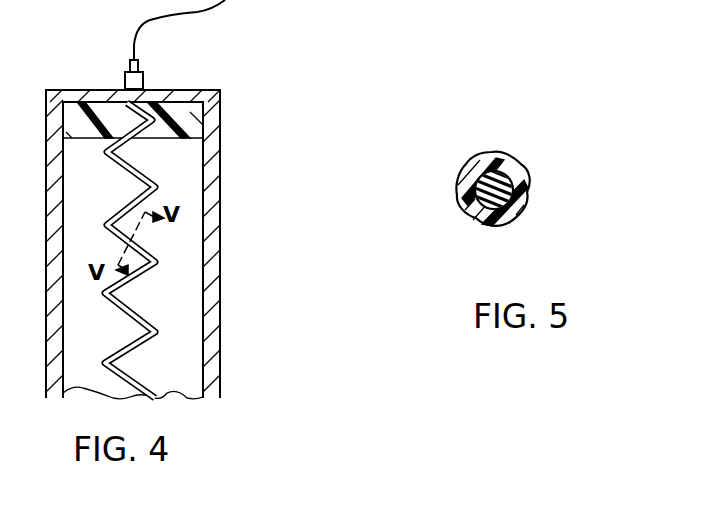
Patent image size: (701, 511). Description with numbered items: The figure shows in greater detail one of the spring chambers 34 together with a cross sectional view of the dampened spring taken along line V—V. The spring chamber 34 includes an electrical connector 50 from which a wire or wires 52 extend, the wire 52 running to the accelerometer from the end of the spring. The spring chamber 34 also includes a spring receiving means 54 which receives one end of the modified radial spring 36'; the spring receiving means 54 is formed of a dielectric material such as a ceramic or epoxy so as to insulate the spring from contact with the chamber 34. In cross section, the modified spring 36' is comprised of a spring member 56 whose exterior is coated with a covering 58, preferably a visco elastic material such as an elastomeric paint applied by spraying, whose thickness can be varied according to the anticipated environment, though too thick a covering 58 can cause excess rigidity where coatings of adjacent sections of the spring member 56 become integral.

In FIG. 4, the spring chamber 34 is at (220, 285).
In FIG. 4, the modified radial spring 36' is at (188, 250).
In FIG. 5, the modified radial spring 36' is at (443, 241).
In FIG. 4, the electrical connector 50 is at (145, 80).
In FIG. 4, the wire 52 is at (222, 0).
In FIG. 4, the spring receiving means 54 is at (187, 124).
In FIG. 5, the spring member 56 is at (510, 198).
In FIG. 5, the covering 58 is at (518, 170).